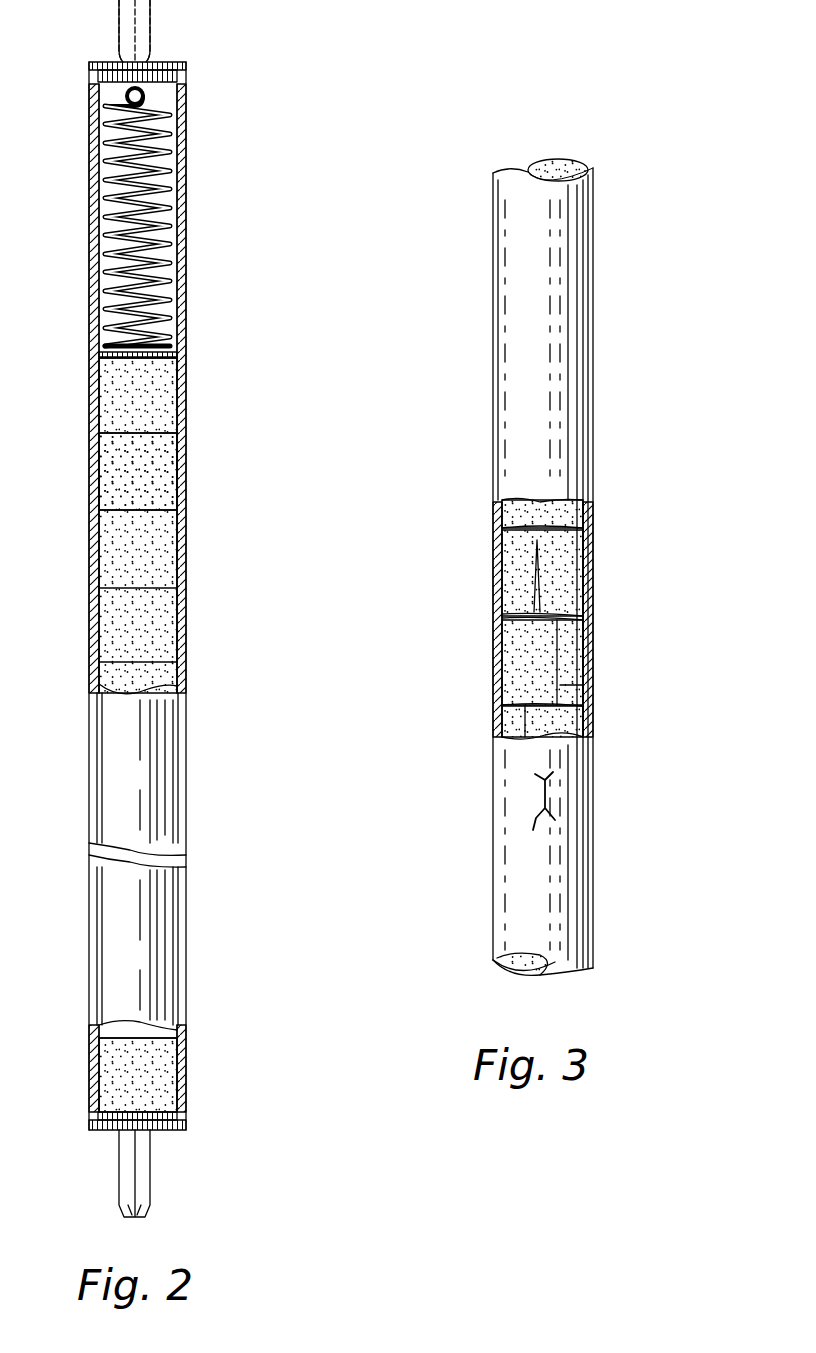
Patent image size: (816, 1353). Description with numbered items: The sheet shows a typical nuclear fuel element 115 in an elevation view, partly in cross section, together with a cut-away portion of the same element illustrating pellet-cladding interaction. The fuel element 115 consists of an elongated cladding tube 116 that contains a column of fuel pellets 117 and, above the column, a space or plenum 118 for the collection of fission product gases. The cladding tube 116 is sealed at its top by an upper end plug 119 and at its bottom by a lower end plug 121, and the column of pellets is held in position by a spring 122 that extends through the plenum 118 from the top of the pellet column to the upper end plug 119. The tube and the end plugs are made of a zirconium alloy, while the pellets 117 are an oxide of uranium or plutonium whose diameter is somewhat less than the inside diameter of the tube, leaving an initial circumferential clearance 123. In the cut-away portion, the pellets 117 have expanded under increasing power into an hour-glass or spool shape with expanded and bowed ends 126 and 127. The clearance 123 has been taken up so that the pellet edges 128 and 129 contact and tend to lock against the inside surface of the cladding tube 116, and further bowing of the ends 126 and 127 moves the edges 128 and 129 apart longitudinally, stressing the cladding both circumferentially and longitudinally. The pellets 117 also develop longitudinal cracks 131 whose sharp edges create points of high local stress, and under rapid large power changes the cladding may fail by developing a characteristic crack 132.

In FIG. 2, the fuel element 115 is at (208, 353).
In FIG. 3, the fuel element 115 is at (608, 333).
In FIG. 2, the cladding tube 116 is at (90, 753).
In FIG. 3, the cladding tube 116 is at (585, 525).
In FIG. 2, the fuel pellets 117 is at (107, 473).
In FIG. 3, the fuel pellets 117 is at (510, 670).
In FIG. 2, the plenum 118 is at (212, 173).
In FIG. 2, the upper end plug 119 is at (168, 62).
In FIG. 2, the lower end plug 121 is at (177, 1130).
In FIG. 2, the spring 122 is at (113, 213).
In FIG. 2, the circumferential clearance 123 is at (183, 475).
In FIG. 3, the expanded bowed end 126 is at (502, 613).
In FIG. 3, the expanded bowed end 127 is at (505, 706).
In FIG. 3, the pellet edge 128 is at (560, 621).
In FIG. 3, the pellet edge 129 is at (585, 610).
In FIG. 3, the longitudinal cracks 131 is at (586, 686).
In FIG. 3, the crack 132 is at (548, 806).